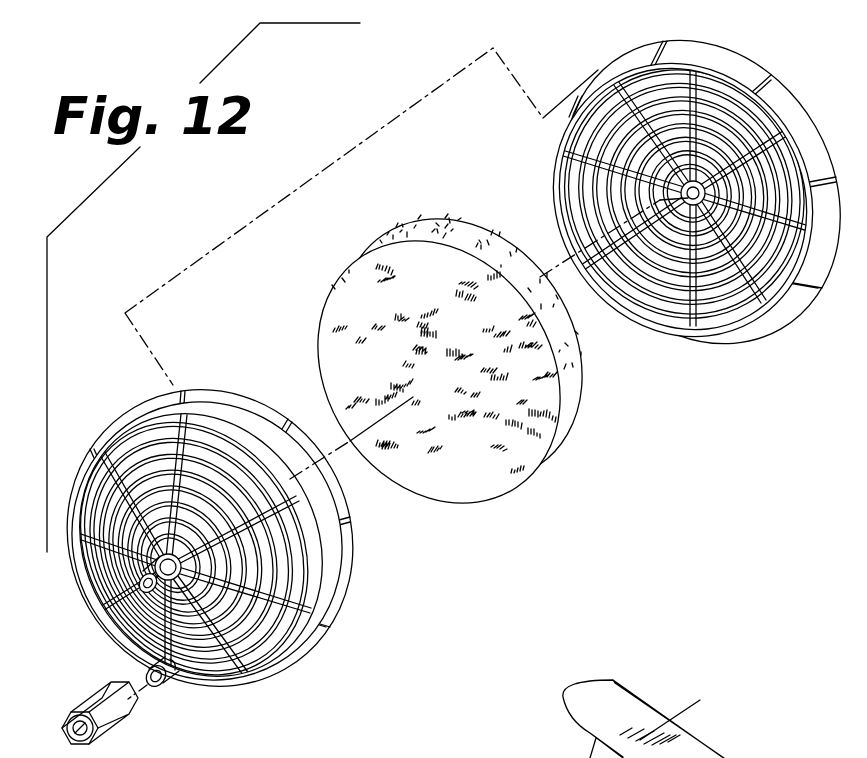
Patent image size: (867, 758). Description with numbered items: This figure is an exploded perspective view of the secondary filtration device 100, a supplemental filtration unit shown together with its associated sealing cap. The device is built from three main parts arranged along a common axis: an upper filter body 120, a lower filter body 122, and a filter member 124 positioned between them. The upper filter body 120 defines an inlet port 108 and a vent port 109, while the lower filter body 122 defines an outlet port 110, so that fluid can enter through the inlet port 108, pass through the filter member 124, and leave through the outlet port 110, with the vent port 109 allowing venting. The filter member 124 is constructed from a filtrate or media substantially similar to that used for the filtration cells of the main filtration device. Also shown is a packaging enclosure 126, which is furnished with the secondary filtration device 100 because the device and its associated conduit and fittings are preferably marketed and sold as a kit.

The secondary filtration device 100 is at (635, 467).
The inlet port 108 is at (125, 645).
The vent port 109 is at (165, 688).
The outlet port 110 is at (688, 205).
The upper filter body 120 is at (335, 600).
The lower filter body 122 is at (672, 197).
The filter member 124 is at (318, 300).
The packaging enclosure 126 is at (718, 757).